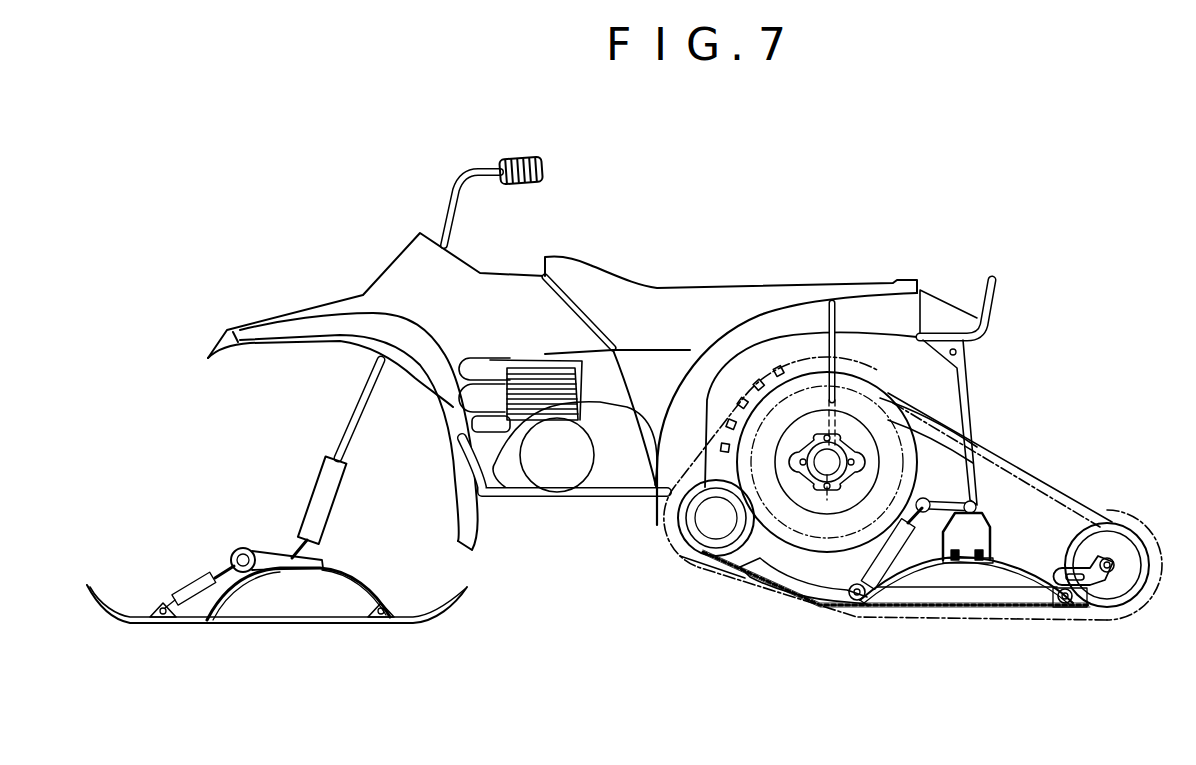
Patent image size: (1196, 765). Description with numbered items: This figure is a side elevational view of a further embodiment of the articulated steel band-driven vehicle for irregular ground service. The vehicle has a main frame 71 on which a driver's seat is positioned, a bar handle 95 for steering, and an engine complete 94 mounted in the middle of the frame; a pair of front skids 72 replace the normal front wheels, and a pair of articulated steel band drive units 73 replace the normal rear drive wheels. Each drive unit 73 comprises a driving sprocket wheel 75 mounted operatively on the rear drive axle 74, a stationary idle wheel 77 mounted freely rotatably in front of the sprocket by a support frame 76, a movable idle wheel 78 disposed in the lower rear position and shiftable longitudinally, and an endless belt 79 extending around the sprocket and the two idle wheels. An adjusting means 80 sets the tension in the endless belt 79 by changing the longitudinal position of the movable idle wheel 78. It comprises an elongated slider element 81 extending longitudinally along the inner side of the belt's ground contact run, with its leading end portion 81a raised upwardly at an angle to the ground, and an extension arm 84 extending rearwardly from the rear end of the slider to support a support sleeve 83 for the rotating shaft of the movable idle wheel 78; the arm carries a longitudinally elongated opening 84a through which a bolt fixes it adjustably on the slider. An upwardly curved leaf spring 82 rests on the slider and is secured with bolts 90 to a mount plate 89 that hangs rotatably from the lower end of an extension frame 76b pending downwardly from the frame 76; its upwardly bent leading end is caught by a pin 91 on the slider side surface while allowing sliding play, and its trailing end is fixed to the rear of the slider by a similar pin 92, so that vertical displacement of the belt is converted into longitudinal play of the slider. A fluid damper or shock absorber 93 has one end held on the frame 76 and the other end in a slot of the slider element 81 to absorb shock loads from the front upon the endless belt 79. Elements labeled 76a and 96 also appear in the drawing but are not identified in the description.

The main frame 71 is at (654, 285).
The front skids 72 is at (357, 620).
The articulated steel band drive unit 73 is at (998, 447).
The rear drive axle 74 is at (829, 466).
The driving sprocket wheel 75 is at (917, 427).
The support frame 76 is at (843, 363).
The bracket plate 76a is at (965, 368).
The extension frame 76b is at (972, 503).
The stationary idle wheel 77 is at (693, 537).
The movable idle wheel 78 is at (1117, 550).
The endless belt 79 is at (1088, 503).
The adjusting means 80 is at (967, 588).
The slider element 81 is at (987, 593).
The leading end portion 81a is at (767, 573).
The leaf spring 82 is at (1013, 570).
The support sleeve 83 is at (1112, 570).
The extension arm 84 is at (1072, 567).
The elongated opening 84a is at (1080, 581).
The mount plate 89 is at (988, 523).
The bolts 90 is at (955, 562).
The pin 91 is at (870, 600).
The pin 92 is at (1065, 605).
The shock absorber 93 is at (913, 567).
The engine complete 94 is at (568, 470).
The bar handle 95 is at (522, 153).
The rear fender 96 is at (834, 283).